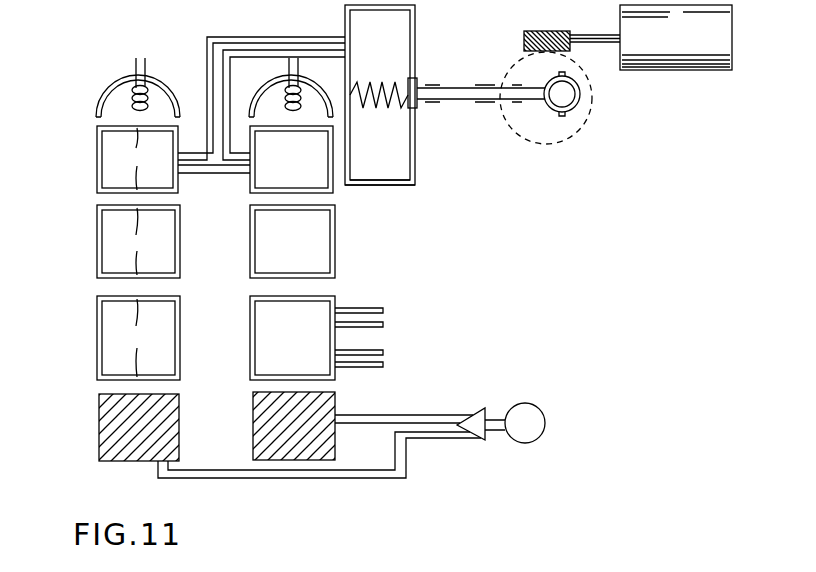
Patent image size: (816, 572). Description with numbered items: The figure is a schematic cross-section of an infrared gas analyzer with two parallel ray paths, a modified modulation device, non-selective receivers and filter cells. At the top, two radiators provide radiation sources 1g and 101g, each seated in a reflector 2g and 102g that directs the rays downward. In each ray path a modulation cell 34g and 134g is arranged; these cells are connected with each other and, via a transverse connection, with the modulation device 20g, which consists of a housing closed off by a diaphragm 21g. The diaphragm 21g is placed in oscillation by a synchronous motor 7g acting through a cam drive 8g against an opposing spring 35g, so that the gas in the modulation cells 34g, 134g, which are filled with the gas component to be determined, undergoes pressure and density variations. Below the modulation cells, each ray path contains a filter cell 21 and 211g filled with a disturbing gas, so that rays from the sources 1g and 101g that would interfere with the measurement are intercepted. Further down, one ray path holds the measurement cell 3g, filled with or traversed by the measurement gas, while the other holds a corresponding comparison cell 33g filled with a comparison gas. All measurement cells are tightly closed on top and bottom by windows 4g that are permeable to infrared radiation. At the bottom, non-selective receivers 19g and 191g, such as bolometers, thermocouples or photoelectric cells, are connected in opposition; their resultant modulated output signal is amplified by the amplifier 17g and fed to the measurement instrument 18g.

The radiation source 1g is at (146, 92).
The reflector 2g is at (122, 84).
The radiation source 101g is at (299, 92).
The reflector 102g is at (270, 83).
The window 4g is at (136, 252).
The modulation cell 34g is at (106, 172).
The modulation cell 134g is at (265, 173).
The filter cell 21 is at (166, 240).
The filter cell 211g is at (317, 240).
The comparison cell 33g is at (168, 339).
The measurement cell 3g is at (263, 349).
The non-selective receiver 19g is at (103, 430).
The non-selective receiver 191g is at (262, 431).
The amplifier 17g is at (470, 413).
The measurement instrument 18g is at (528, 406).
The diaphragm 21g is at (407, 46).
The modulation device 20g is at (380, 176).
The opposing spring 35g is at (378, 105).
The cam drive 8g is at (571, 49).
The synchronous motor 7g is at (683, 68).